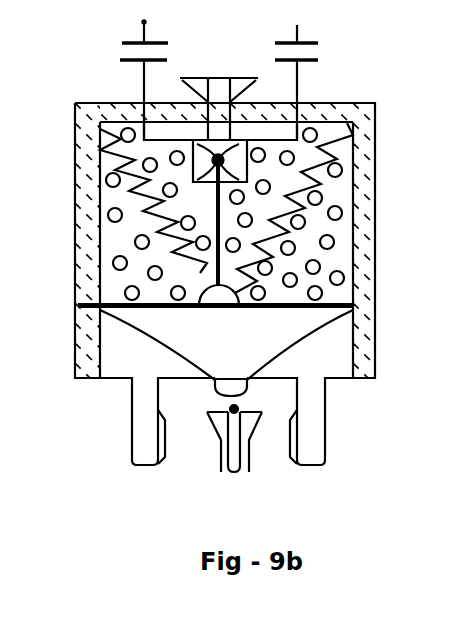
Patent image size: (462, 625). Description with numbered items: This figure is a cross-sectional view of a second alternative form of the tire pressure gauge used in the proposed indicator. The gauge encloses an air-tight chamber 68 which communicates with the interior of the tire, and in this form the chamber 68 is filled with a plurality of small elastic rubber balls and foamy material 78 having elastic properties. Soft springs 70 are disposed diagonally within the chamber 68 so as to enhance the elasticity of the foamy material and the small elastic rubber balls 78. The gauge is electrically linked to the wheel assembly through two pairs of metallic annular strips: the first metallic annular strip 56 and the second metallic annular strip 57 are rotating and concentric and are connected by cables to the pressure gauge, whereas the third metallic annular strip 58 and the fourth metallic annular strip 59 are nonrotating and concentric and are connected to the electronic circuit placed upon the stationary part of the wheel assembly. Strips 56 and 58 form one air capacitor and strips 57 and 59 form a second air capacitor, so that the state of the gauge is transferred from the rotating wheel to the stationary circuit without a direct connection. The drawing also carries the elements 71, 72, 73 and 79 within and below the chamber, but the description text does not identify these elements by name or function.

The first metallic annular strip 56 is at (122, 61).
The second metallic annular strip 57 is at (314, 61).
The third metallic annular strip 58 is at (132, 43).
The fourth metallic annular strip 59 is at (305, 43).
The chamber 68 is at (123, 252).
The soft springs 70 is at (125, 157).
The base plate 71 is at (265, 304).
The valve member 72 is at (192, 168).
The stem 73 is at (221, 205).
The small elastic rubber balls and foamy material 78 is at (222, 246).
The nozzle 79 is at (246, 387).